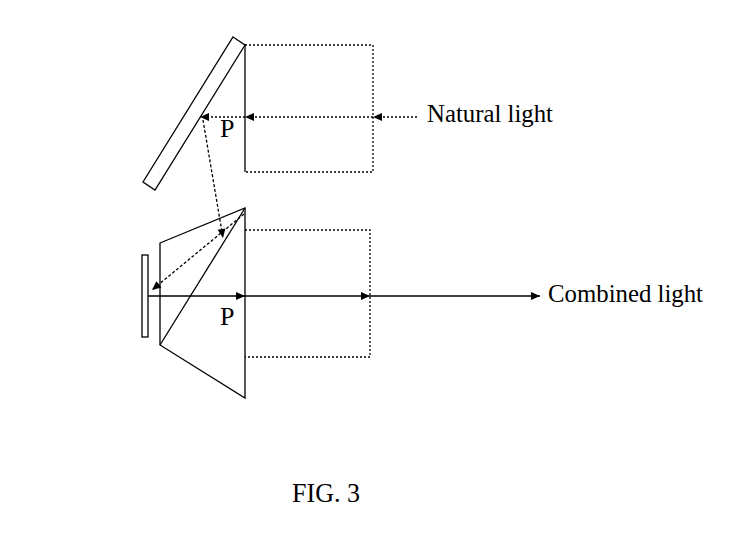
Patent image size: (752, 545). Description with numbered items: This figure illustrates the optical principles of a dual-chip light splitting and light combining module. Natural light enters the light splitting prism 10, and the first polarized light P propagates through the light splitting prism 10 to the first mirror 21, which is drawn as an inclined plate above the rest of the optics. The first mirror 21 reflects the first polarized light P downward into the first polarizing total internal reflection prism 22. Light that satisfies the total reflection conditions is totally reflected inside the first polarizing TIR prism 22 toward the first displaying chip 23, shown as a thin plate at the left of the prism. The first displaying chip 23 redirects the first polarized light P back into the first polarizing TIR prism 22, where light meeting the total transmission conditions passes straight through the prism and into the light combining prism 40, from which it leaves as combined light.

The light splitting prism 10 is at (343, 95).
The first mirror 21 is at (180, 130).
The first polarizing total internal reflection prism 22 is at (185, 247).
The first displaying chip 23 is at (143, 277).
The light combining prism 40 is at (350, 268).